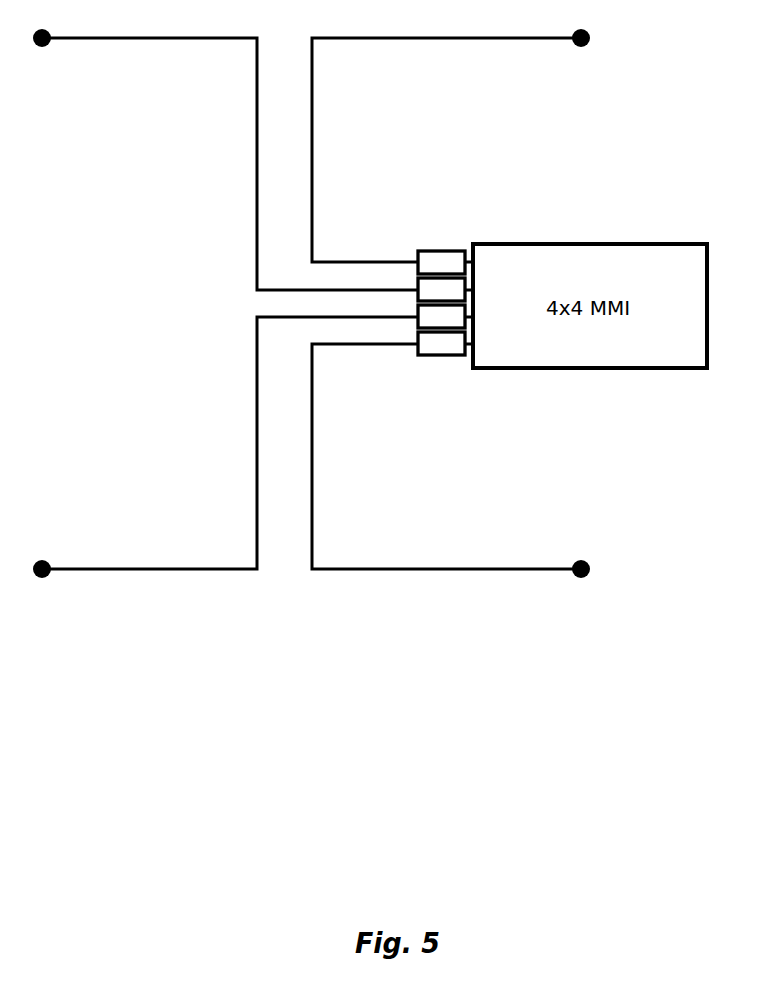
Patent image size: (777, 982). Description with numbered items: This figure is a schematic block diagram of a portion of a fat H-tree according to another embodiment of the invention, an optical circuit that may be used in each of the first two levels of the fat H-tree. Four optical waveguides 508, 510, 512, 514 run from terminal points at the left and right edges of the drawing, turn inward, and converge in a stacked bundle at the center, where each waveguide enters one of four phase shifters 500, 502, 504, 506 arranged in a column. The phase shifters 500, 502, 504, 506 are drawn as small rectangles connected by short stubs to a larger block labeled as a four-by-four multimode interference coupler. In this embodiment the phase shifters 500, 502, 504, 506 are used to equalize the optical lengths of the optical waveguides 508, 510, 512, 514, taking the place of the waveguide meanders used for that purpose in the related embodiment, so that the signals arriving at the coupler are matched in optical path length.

The phase shifter 500 is at (441, 250).
The phase shifter 502 is at (418, 284).
The phase shifter 504 is at (418, 323).
The phase shifter 506 is at (438, 356).
The optical waveguide 508 is at (257, 124).
The optical waveguide 510 is at (312, 134).
The optical waveguide 512 is at (257, 498).
The optical waveguide 514 is at (312, 500).